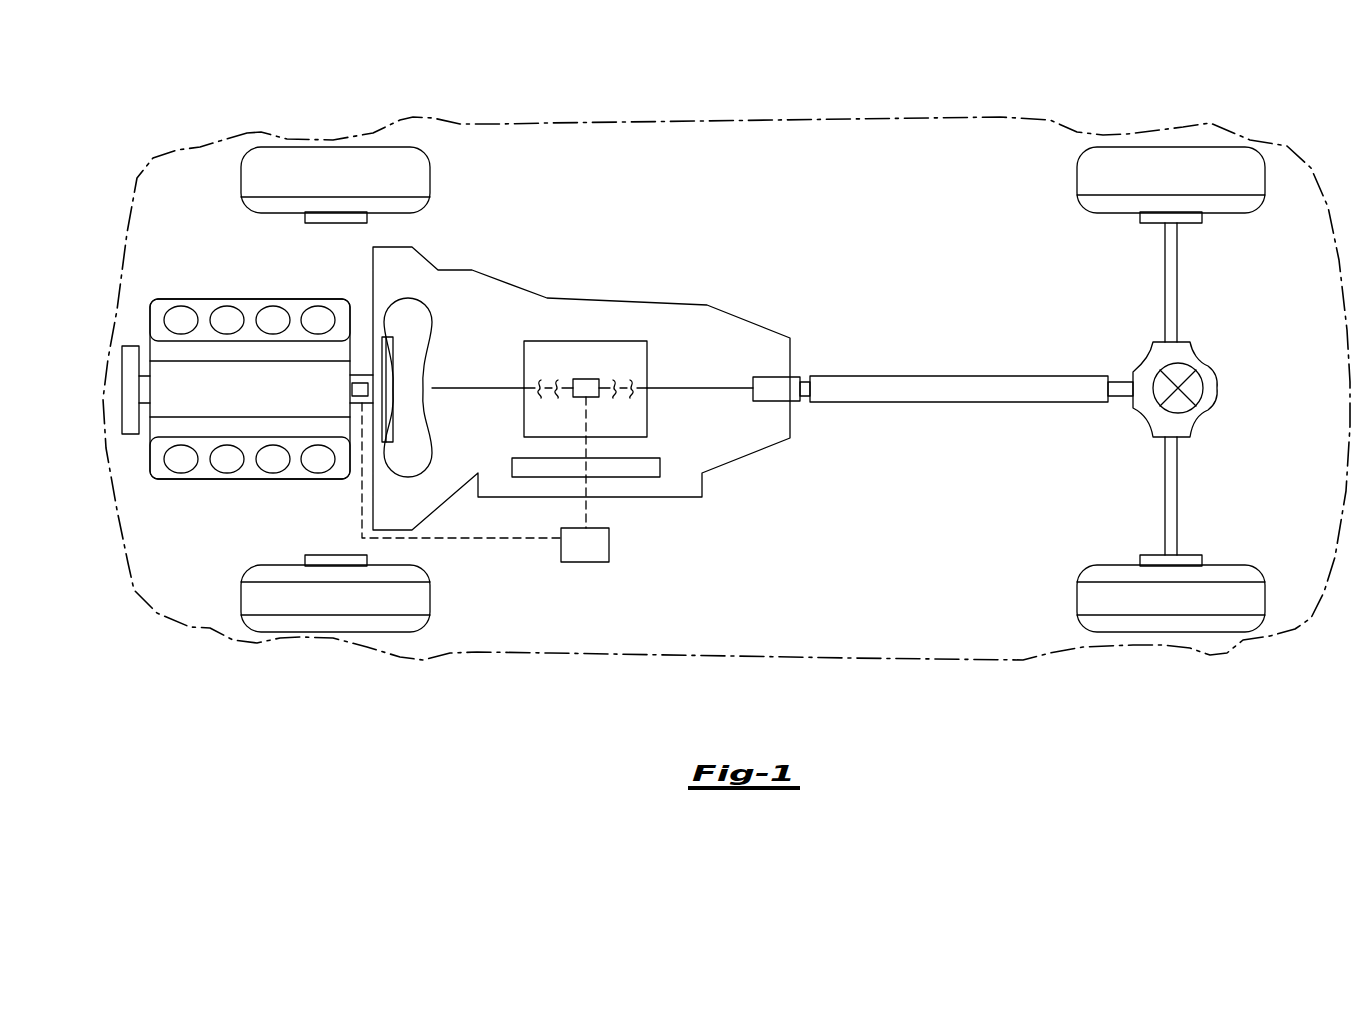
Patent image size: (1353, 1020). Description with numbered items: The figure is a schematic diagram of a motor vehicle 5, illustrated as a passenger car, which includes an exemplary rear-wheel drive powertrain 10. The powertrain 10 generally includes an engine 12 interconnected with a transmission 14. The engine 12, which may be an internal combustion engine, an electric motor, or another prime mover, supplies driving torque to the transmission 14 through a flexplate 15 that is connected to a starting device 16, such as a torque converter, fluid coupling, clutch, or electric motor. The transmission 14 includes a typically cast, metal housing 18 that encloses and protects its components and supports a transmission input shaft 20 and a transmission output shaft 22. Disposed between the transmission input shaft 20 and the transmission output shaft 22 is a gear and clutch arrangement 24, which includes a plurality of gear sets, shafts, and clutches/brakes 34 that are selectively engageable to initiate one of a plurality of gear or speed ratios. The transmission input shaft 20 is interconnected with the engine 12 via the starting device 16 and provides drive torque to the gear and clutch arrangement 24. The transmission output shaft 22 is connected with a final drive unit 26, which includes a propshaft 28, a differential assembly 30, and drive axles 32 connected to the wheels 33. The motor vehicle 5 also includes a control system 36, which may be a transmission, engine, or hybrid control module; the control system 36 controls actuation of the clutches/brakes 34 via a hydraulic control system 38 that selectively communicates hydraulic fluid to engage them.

The motor vehicle 5 is at (830, 120).
The powertrain 10 is at (778, 228).
The engine 12 is at (194, 404).
The transmission 14 is at (610, 298).
The flexplate 15 is at (378, 335).
The starting device 16 is at (430, 308).
The housing 18 is at (753, 320).
The transmission input shaft 20 is at (432, 388).
The transmission output shaft 22 is at (693, 387).
The gear and clutch arrangement 24 is at (557, 340).
The final drive unit 26 is at (1062, 340).
The propshaft 28 is at (930, 377).
The differential assembly 30 is at (1205, 357).
The drive axles 32 is at (1176, 292).
The wheels 33 is at (1077, 180).
The clutches/brakes 34 is at (586, 379).
The control system 36 is at (610, 557).
The hydraulic control system 38 is at (638, 478).